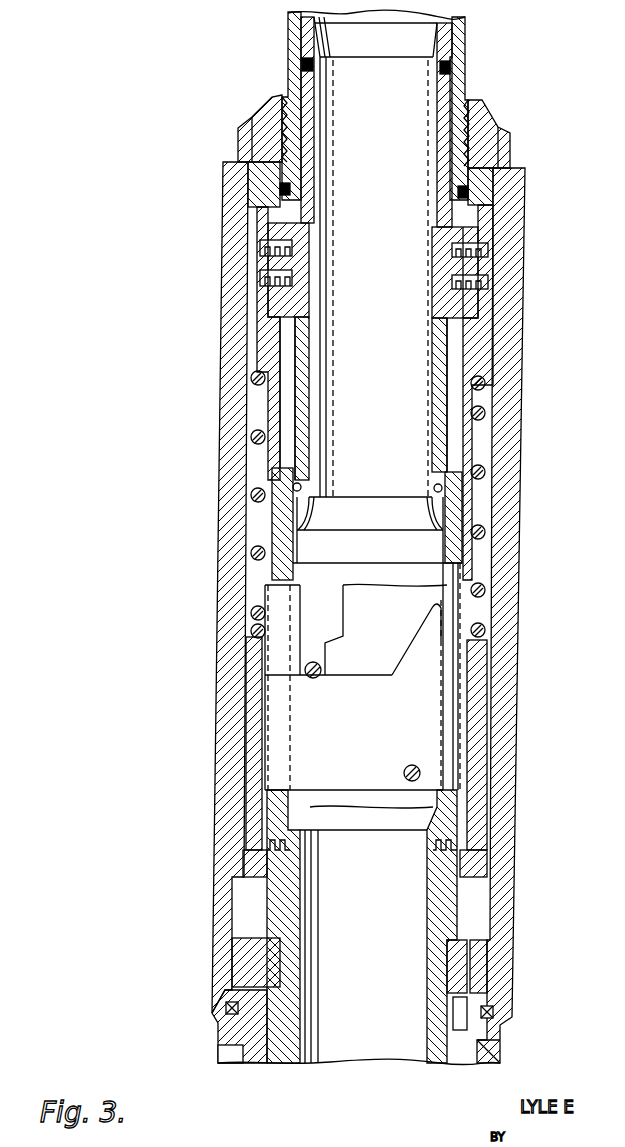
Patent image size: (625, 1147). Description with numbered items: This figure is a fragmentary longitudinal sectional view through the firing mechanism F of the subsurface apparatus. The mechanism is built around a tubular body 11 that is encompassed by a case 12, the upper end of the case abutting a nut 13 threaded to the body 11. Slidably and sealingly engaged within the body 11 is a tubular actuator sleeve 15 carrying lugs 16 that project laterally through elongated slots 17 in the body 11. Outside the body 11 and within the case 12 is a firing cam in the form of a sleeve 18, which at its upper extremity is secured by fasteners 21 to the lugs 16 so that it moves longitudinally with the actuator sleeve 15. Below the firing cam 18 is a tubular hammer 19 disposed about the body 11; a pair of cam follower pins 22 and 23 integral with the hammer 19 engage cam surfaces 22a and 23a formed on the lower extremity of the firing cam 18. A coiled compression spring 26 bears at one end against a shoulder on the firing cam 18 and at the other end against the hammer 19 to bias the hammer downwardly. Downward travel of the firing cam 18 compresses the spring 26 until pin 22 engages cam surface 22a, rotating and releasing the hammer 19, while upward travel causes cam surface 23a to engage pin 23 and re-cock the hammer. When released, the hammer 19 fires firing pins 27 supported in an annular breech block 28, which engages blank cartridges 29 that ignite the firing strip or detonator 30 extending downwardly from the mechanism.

The body 11 is at (465, 51).
The case 12 is at (507, 580).
The nut 13 is at (470, 108).
The tubular actuator sleeve 15 is at (303, 165).
The lugs 16 is at (450, 266).
The elongated slots 17 is at (283, 345).
The firing cam sleeve 18 is at (492, 365).
The hammer 19 is at (470, 705).
The fasteners 21 is at (260, 277).
The cam follower pin 22 is at (412, 765).
The cam surface 22a is at (408, 657).
The cam follower pin 23 is at (310, 680).
The cam surface 23a is at (330, 640).
The coiled compression spring 26 is at (485, 413).
The firing pins 27 is at (250, 374).
The breech block 28 is at (478, 985).
The blank cartridges 29 is at (453, 1012).
The firing strip or detonator 30 is at (467, 1047).
The firing mechanism F is at (530, 451).